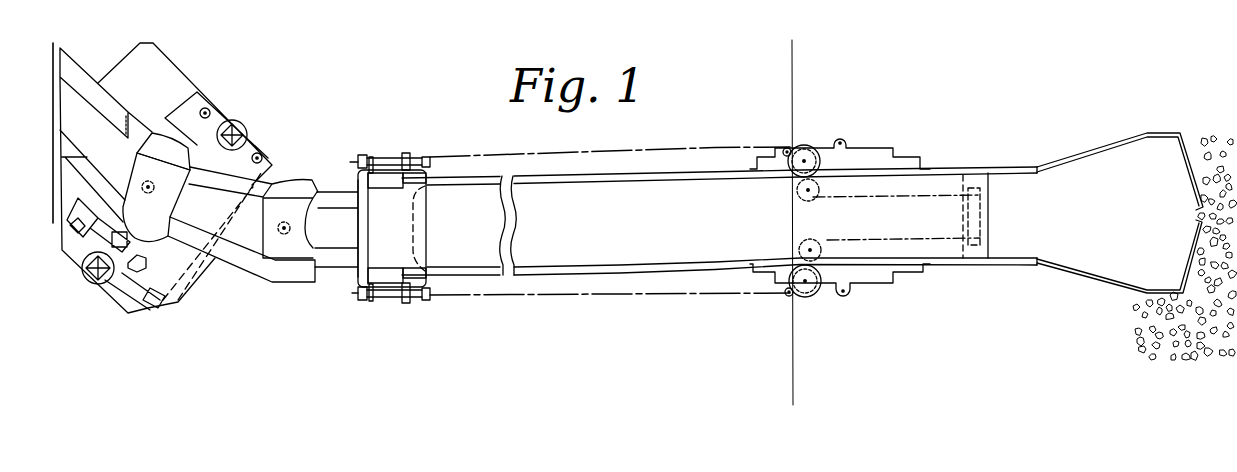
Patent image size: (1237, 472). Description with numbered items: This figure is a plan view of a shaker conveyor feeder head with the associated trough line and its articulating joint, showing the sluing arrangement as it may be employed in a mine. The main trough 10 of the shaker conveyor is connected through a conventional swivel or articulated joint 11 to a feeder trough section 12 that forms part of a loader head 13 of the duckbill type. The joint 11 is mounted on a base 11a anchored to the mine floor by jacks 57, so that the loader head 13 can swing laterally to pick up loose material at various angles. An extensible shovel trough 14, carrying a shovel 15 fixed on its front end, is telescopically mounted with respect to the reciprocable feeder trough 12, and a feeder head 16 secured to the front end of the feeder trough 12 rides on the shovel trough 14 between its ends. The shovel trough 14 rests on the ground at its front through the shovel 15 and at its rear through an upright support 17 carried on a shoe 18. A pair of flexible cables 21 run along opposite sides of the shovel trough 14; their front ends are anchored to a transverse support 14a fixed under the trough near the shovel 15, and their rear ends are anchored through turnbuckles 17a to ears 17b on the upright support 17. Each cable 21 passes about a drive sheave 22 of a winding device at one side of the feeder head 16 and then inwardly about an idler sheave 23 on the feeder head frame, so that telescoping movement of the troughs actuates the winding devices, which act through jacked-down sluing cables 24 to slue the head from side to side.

The main trough 10 is at (80, 85).
The base 11a is at (163, 80).
The jacks 57 is at (247, 128).
The swivel or articulated joint 11 is at (274, 176).
The feeder trough section 12 is at (333, 193).
The upright support 17 is at (373, 272).
The turnbuckles 17a is at (390, 157).
The ears 17b is at (372, 153).
The shoe 18 is at (420, 228).
The extensible shovel trough 14 is at (653, 175).
The flexible cables 21 is at (590, 155).
The drive sheave 22 is at (817, 146).
The idler sheave 23 is at (802, 199).
The feeder head 16 is at (879, 143).
The loader head 13 is at (964, 162).
The transverse support 14a is at (982, 221).
The shovel 15 is at (1140, 202).
The sluing cables 24 is at (796, 106).